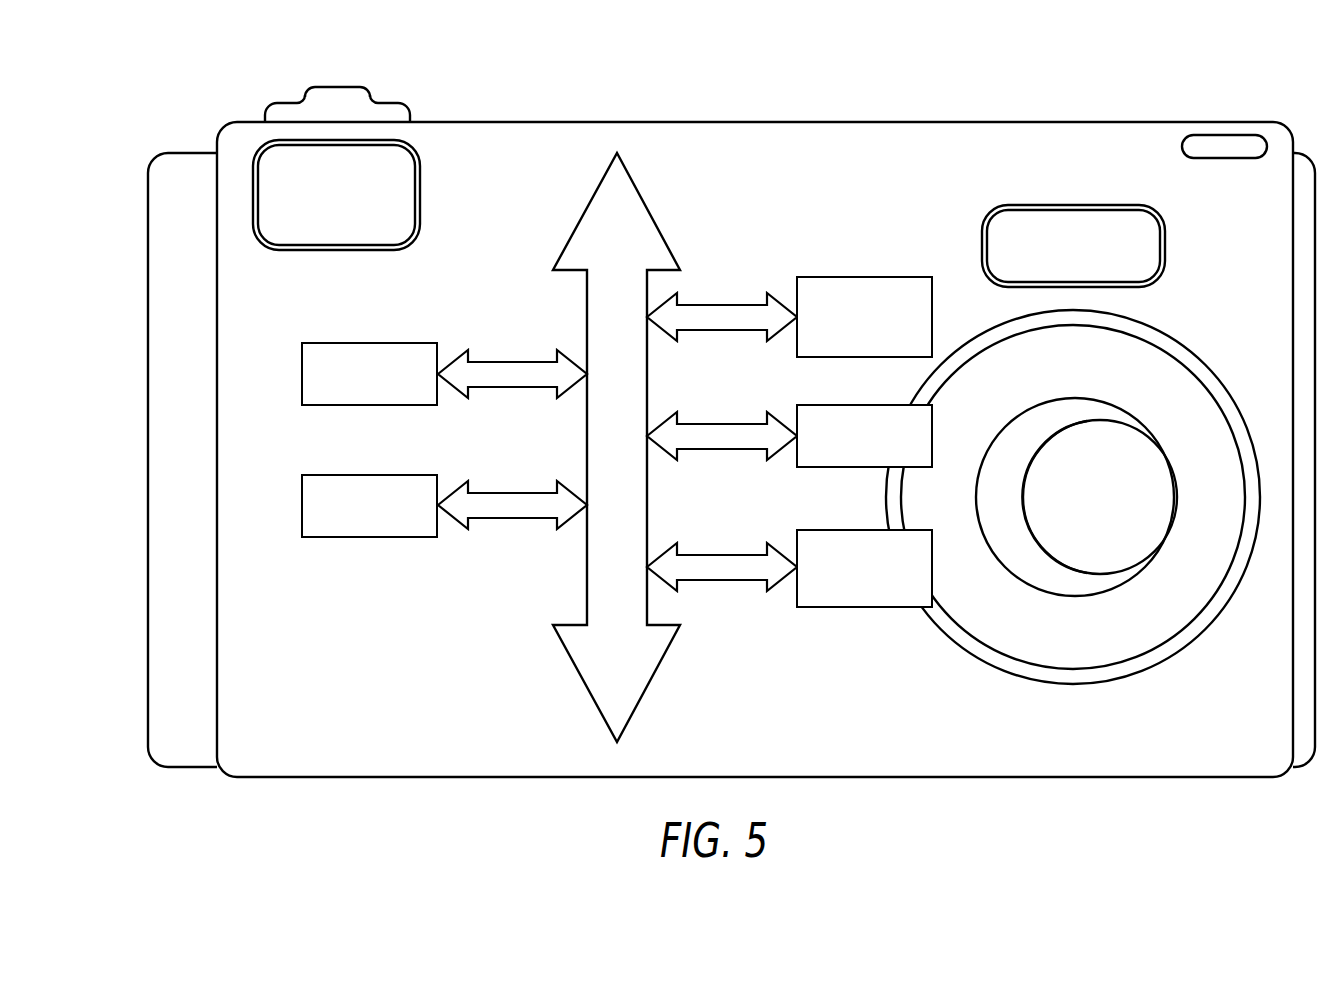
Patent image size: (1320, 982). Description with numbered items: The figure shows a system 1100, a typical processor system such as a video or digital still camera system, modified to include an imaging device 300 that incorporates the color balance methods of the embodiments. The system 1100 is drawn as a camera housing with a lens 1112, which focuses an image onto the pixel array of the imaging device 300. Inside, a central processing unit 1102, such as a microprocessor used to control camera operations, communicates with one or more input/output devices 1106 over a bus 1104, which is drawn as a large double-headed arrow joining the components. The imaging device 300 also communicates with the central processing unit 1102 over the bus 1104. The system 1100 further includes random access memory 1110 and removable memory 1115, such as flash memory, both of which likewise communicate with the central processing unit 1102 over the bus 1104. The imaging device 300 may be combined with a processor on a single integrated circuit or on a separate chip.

The system 1100 is at (1103, 75).
The central processing unit 1102 is at (302, 373).
The bus 1104 is at (582, 683).
The input/output device 1106 is at (932, 413).
The random access memory 1110 is at (302, 503).
The lens 1112 is at (1141, 440).
The removable memory 1115 is at (932, 573).
The imaging device 300 is at (932, 301).